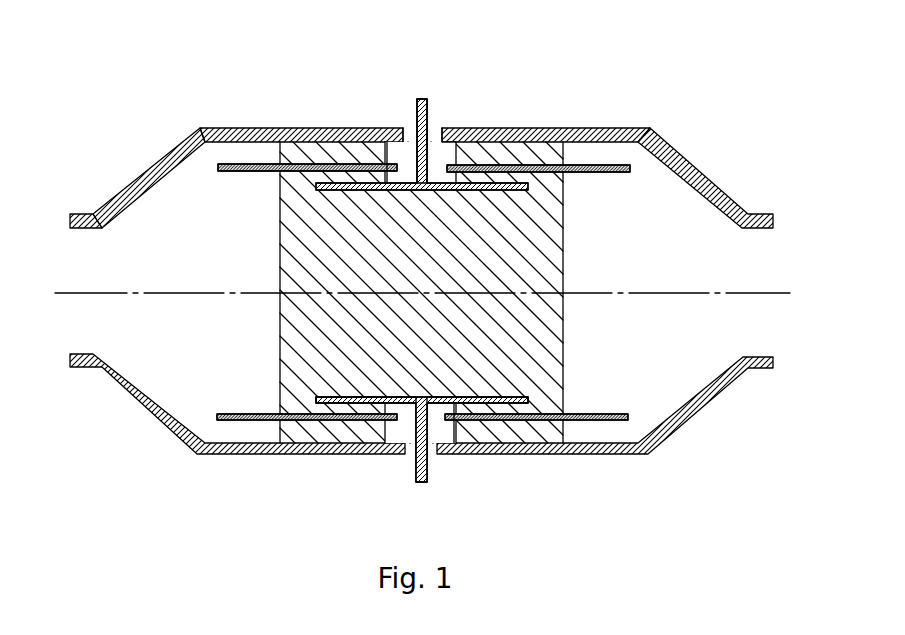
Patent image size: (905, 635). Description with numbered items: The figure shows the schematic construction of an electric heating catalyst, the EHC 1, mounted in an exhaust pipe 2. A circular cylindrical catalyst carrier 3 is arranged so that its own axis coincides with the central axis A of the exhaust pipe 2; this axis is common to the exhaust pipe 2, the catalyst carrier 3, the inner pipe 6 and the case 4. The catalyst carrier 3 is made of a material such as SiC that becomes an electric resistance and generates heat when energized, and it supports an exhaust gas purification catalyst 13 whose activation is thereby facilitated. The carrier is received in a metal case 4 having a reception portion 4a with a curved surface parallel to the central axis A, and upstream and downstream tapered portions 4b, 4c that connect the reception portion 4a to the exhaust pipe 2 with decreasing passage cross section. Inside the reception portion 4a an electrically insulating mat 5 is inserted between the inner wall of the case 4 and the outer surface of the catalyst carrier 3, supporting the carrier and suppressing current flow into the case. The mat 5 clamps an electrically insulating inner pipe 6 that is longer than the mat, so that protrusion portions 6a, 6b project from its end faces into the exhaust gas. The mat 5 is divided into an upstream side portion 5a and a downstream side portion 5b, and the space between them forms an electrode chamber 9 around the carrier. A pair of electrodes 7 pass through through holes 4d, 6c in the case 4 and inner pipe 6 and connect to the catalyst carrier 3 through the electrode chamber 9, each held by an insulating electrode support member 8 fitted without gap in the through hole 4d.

The electric heating catalyst (EHC) 1 is at (643, 63).
The exhaust pipe 2 is at (80, 213).
The catalyst carrier 3 is at (438, 292).
The case 4 is at (420, 275).
The reception portion 4a is at (550, 128).
The tapered portion 4b is at (152, 165).
The tapered portion 4c is at (698, 172).
The through hole 4d is at (403, 138).
The mat 5 is at (425, 325).
The upstream side portion 5a is at (300, 400).
The downstream side portion 5b is at (545, 405).
The inner pipe 6 is at (419, 245).
The protrusion portion 6a is at (225, 172).
The protrusion portion 6b is at (618, 172).
The through hole 6c is at (472, 128).
The electrode 7 is at (421, 99).
The electrode support member 8 is at (433, 140).
The electrode chamber 9 is at (392, 140).
The exhaust gas purification catalyst 13 is at (548, 251).
The central axis A is at (727, 293).